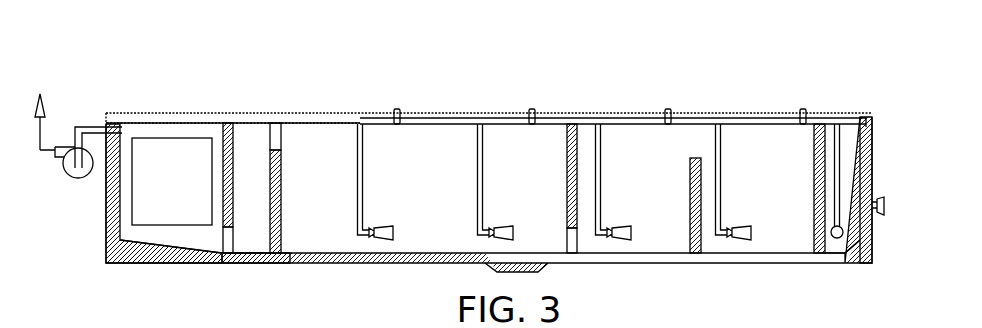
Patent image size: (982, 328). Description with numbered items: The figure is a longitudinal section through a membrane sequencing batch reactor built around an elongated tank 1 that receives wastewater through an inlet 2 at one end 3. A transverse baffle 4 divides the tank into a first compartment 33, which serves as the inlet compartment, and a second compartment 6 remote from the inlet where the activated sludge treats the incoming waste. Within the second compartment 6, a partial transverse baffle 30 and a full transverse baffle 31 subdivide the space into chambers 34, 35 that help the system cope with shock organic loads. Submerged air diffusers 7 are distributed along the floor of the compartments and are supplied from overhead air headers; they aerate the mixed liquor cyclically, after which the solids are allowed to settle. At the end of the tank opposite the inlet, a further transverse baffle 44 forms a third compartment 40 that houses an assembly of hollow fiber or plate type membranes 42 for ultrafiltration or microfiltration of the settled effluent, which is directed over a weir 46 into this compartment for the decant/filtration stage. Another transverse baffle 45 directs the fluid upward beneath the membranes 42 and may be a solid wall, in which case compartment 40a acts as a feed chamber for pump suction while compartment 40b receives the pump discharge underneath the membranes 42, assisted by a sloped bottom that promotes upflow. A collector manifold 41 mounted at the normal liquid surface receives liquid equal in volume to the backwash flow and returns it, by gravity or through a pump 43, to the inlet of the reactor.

The tank 1 is at (704, 88).
The inlet 2 is at (884, 213).
The end of tank 3 is at (873, 157).
The transverse baffle 4 is at (814, 237).
The second compartment 6 is at (424, 160).
The submerged air diffusers 7 is at (383, 226).
The partial transverse baffle 30 is at (688, 230).
The full transverse baffle 31 is at (567, 150).
The first compartment 33 is at (850, 148).
The chamber 34 is at (771, 158).
The chamber 35 is at (648, 158).
The third compartment 40 is at (248, 146).
The feed chamber compartment 40a is at (248, 246).
The pump discharge compartment 40b is at (152, 236).
The collector manifold 41 is at (95, 124).
The membranes 42 is at (172, 181).
The pump 43 is at (68, 180).
The transverse baffle 44 is at (282, 207).
The transverse baffle 45 is at (223, 135).
The weir 46 is at (282, 140).